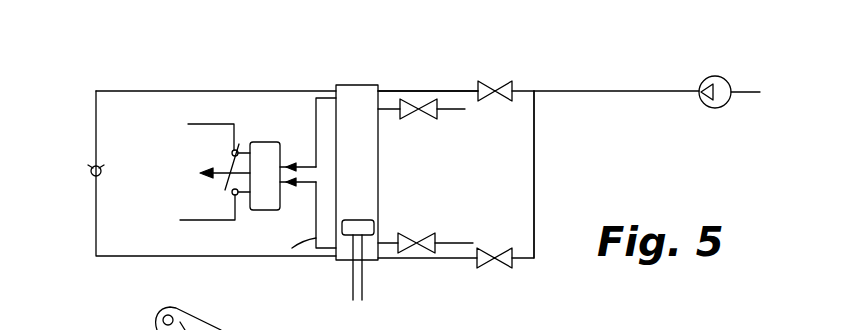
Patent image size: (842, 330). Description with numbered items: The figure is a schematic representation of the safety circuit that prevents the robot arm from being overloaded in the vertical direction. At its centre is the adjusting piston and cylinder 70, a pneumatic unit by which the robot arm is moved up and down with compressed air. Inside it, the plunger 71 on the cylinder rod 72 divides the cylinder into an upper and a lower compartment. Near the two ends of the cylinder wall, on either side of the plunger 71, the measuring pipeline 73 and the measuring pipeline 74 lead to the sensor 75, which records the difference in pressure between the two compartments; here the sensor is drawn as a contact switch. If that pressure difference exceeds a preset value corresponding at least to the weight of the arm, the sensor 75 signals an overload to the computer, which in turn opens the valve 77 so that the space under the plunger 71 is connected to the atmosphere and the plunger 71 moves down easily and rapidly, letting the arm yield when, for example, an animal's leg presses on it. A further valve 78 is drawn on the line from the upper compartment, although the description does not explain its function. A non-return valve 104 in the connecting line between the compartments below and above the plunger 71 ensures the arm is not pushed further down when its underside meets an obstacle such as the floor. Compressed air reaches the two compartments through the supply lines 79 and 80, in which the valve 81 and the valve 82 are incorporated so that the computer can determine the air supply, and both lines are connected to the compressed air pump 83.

The adjusting piston and cylinder 70 is at (378, 168).
The plunger 71 is at (358, 220).
The cylinder rod 72 is at (364, 295).
The measuring pipeline 73 is at (292, 248).
The measuring pipeline 74 is at (316, 108).
The sensor 75 is at (272, 134).
The valve 77 is at (437, 234).
The upper valve 78 is at (428, 120).
The supply line 79 is at (534, 172).
The supply line 80 is at (418, 91).
The valve 81 is at (506, 266).
The valve 82 is at (510, 84).
The compressed air pump 83 is at (712, 108).
The non-return valve 104 is at (92, 176).